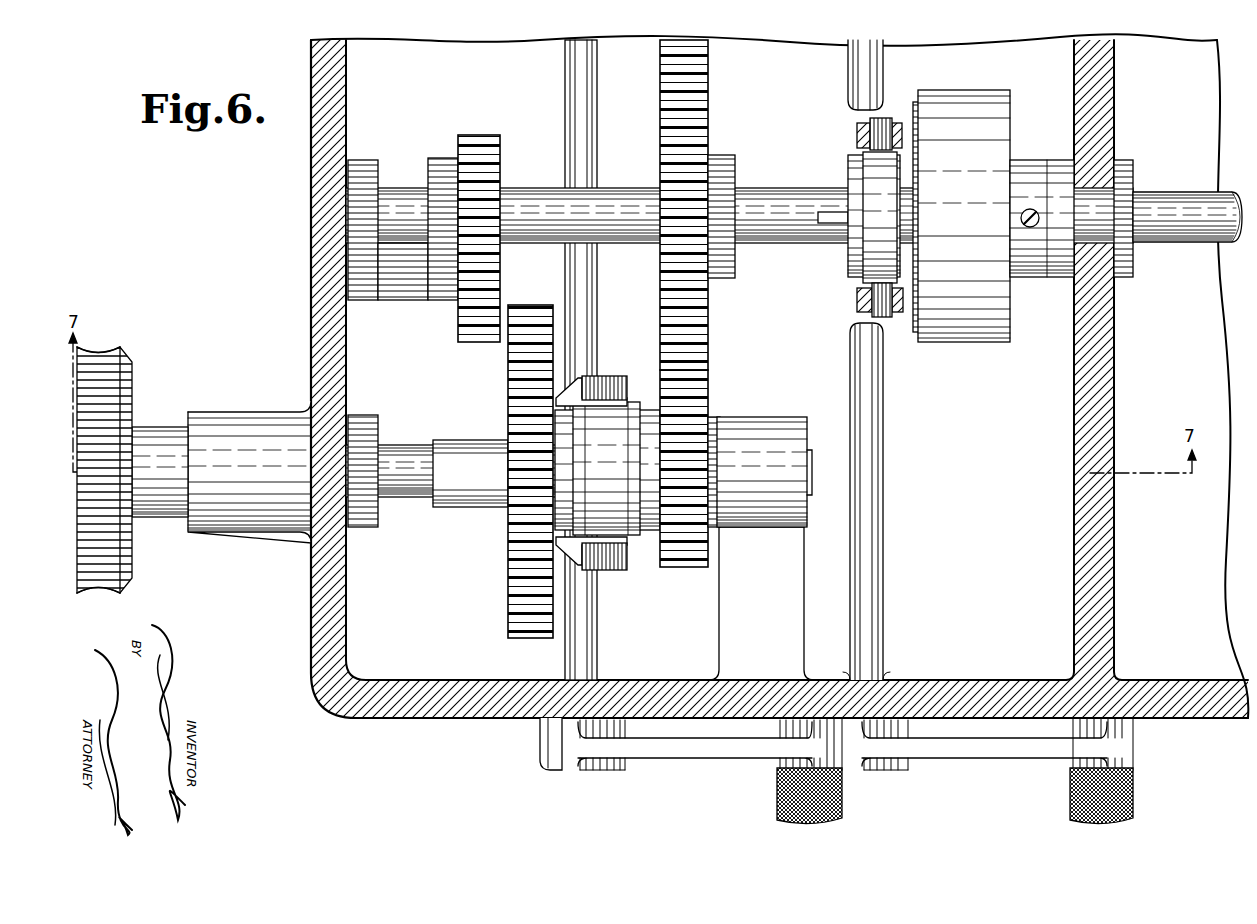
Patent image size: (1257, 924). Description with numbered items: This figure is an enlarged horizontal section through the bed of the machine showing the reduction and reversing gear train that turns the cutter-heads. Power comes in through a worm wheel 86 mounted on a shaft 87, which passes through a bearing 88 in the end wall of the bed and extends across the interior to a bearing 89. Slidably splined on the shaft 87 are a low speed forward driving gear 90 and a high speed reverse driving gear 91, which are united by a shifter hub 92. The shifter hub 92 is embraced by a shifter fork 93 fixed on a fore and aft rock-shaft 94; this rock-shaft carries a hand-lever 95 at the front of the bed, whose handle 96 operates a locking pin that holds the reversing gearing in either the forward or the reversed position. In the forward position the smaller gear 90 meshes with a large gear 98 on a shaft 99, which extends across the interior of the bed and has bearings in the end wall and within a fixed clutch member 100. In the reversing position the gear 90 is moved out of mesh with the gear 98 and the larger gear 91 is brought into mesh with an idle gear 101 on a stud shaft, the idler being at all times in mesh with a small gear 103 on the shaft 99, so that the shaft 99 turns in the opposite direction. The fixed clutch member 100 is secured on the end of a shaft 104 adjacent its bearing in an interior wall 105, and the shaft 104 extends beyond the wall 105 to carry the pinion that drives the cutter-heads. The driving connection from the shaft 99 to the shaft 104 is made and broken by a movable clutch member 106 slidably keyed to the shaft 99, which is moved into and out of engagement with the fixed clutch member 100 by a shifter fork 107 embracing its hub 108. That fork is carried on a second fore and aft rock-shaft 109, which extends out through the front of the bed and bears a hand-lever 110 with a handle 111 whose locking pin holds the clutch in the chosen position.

The worm wheel 86 is at (132, 572).
The shaft 87 is at (410, 498).
The bearing 88 is at (285, 532).
The bearing 89 is at (790, 417).
The low speed forward driving gear 90 is at (688, 567).
The high speed reverse driving gear 91 is at (530, 638).
The shifter hub 92 is at (648, 537).
The shifter fork 93 is at (617, 378).
The rock-shaft 94 is at (598, 647).
The hand-lever 95 is at (682, 758).
The handle 96 is at (843, 805).
The large gear 98 is at (708, 95).
The shaft 99 is at (778, 188).
The fixed clutch member 100 is at (987, 343).
The idle gear 101 is at (470, 342).
The small gear 103 is at (488, 135).
The shaft 104 is at (1183, 243).
The interior wall 105 is at (1105, 363).
The movable clutch member 106 is at (910, 336).
The shifter fork 107 is at (857, 300).
The hub 108 is at (850, 258).
The rock-shaft 109 is at (884, 490).
The hand-lever 110 is at (980, 757).
The handle 111 is at (1137, 803).